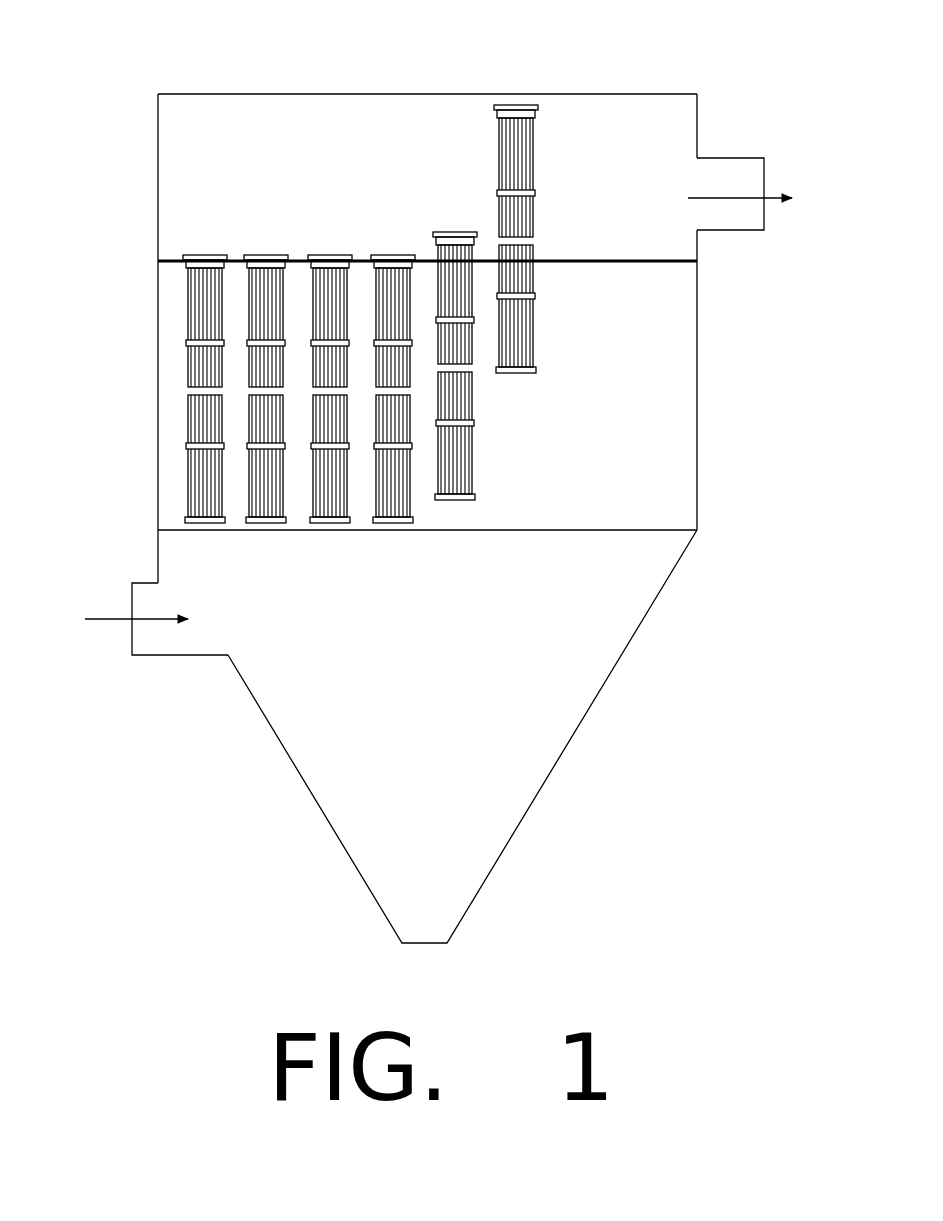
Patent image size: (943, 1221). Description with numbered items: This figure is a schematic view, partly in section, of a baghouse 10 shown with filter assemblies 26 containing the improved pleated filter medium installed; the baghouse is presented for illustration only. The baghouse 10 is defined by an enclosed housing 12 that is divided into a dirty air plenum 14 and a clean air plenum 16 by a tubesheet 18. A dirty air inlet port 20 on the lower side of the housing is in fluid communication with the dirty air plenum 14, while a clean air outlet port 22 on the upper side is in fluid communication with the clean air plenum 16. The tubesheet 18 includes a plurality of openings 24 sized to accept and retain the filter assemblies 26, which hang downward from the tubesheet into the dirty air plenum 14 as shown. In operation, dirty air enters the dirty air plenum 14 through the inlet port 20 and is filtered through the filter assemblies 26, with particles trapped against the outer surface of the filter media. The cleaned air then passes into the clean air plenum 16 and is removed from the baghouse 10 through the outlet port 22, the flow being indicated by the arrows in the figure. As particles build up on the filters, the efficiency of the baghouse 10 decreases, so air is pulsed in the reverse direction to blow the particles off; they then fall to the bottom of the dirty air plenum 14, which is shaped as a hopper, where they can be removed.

The baghouse 10 is at (138, 80).
The enclosed housing 12 is at (697, 445).
The dirty air plenum 14 is at (663, 505).
The clean air plenum 16 is at (298, 122).
The tubesheet 18 is at (674, 261).
The dirty air inlet port 20 is at (148, 585).
The clean air outlet port 22 is at (764, 160).
The openings 24 is at (643, 262).
The filter assemblies 26 is at (537, 181).